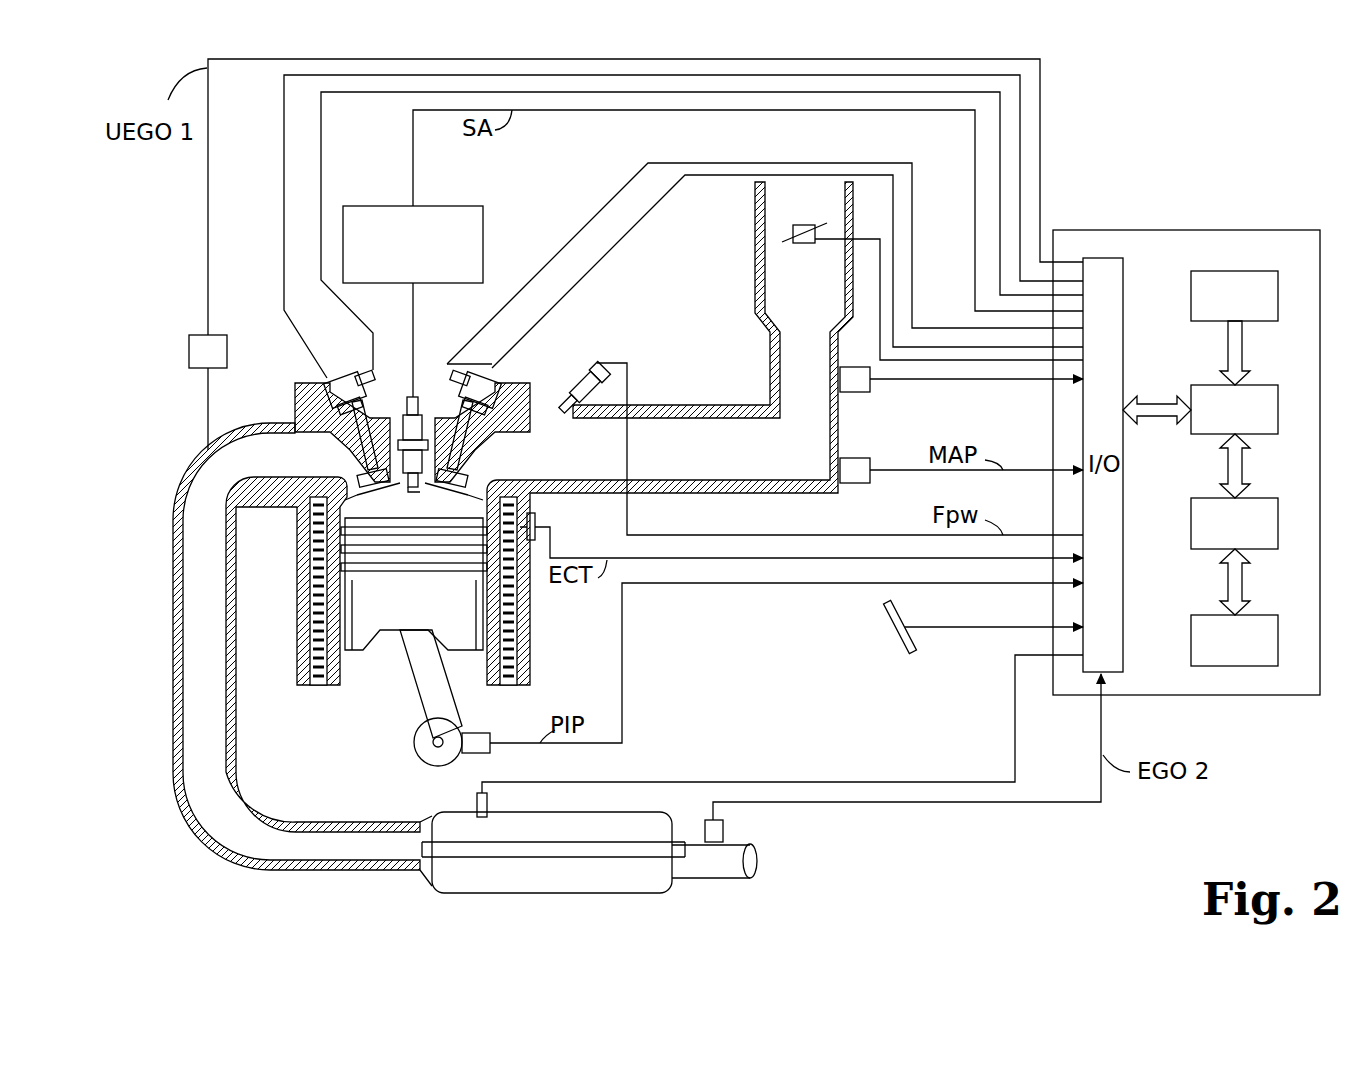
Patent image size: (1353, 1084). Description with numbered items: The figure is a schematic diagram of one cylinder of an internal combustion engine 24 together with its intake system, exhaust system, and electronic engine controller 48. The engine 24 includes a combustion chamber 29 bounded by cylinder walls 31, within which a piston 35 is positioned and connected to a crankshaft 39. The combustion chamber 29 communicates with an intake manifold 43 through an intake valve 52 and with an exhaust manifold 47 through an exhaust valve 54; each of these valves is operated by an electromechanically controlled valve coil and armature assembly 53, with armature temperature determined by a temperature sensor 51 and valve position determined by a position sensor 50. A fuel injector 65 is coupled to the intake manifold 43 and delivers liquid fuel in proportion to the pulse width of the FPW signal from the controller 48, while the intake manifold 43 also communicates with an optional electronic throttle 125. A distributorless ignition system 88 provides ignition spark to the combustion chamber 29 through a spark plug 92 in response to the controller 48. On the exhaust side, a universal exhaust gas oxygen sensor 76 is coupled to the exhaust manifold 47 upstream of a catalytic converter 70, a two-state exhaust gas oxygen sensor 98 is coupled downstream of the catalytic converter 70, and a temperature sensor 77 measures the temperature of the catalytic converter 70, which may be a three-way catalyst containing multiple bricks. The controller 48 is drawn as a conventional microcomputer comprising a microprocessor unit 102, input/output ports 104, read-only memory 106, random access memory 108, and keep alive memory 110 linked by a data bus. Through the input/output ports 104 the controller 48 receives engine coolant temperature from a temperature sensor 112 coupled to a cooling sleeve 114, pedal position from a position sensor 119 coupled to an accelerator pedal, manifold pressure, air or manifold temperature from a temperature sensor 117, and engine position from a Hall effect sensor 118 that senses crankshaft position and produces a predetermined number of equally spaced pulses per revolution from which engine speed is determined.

The internal combustion engine 24 is at (299, 380).
The combustion chamber 29 is at (402, 500).
The cylinder walls 31 is at (347, 672).
The piston 35 is at (416, 615).
The crankshaft 39 is at (430, 750).
The intake manifold 43 is at (741, 464).
The exhaust manifold 47 is at (207, 495).
The electronic engine controller 48 is at (1187, 449).
The position sensor 50 is at (370, 376).
The temperature sensor 51 is at (425, 384).
The intake valve 52 is at (470, 472).
The valve coil and armature assembly 53 is at (347, 380).
The exhaust valve 54 is at (356, 470).
The fuel injector 65 is at (566, 371).
The catalytic converter 70 is at (485, 893).
The universal exhaust gas oxygen (UEGO) sensor 76 is at (208, 335).
The temperature sensor 77 is at (476, 800).
The distributorless ignition system 88 is at (437, 206).
The spark plug 92 is at (411, 395).
The two-state exhaust gas oxygen sensor 98 is at (736, 836).
The microprocessor unit 102 is at (1260, 385).
The input/output ports 104 is at (1122, 300).
The read-only memory 106 is at (1260, 271).
The random access memory 108 is at (1260, 498).
The keep alive memory 110 is at (1260, 615).
The temperature sensor 112 is at (538, 526).
The cooling sleeve 114 is at (316, 684).
The temperature sensor 117 is at (879, 394).
The Hall effect sensor 118 is at (500, 715).
The position sensor 119 is at (893, 636).
The electronic throttle 125 is at (793, 221).